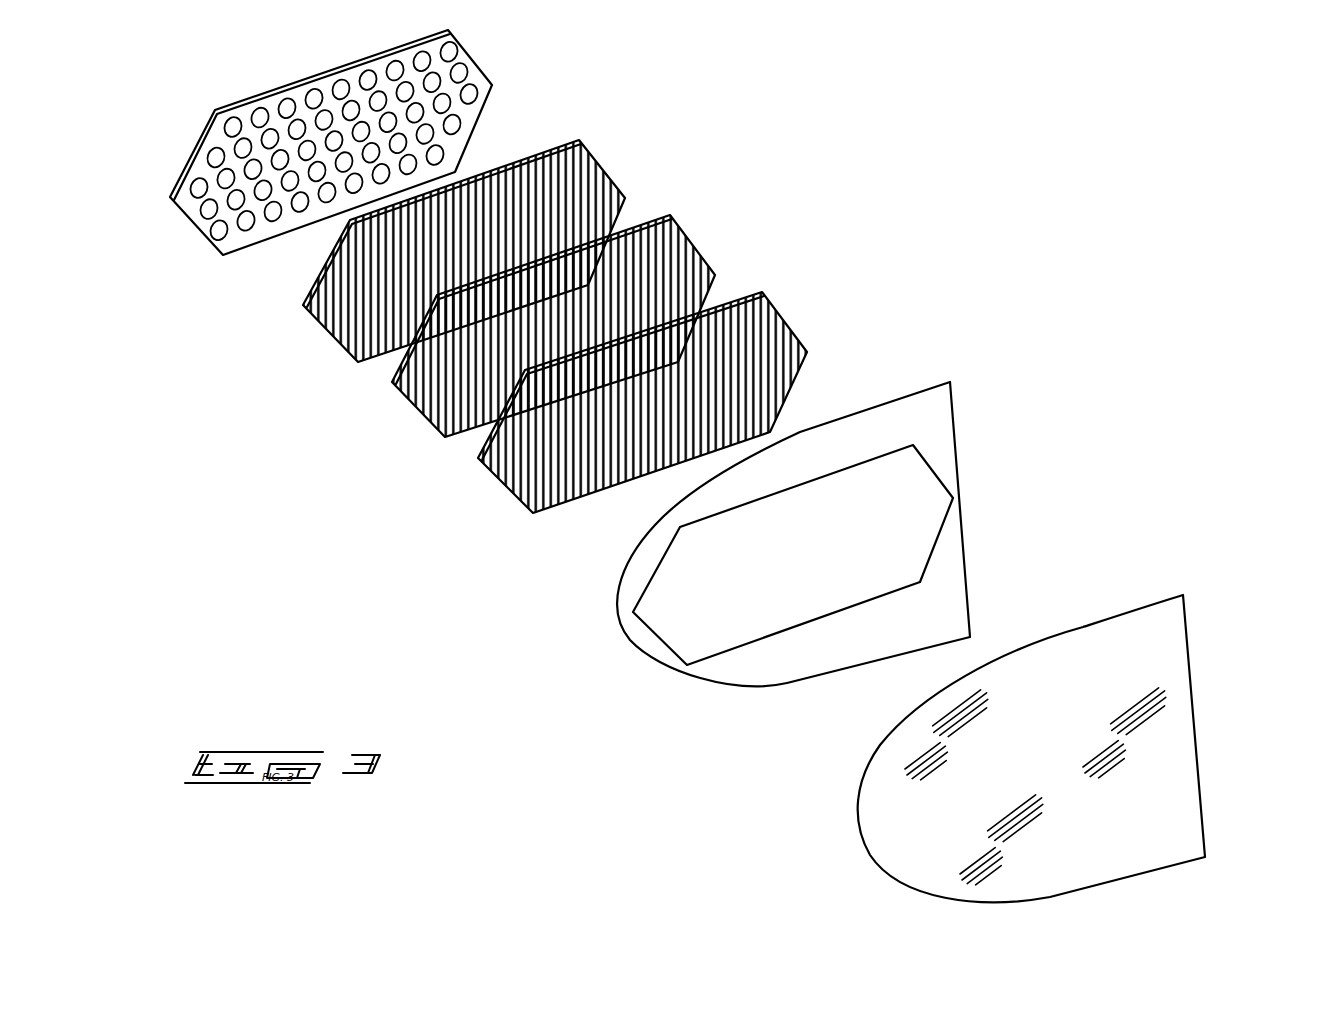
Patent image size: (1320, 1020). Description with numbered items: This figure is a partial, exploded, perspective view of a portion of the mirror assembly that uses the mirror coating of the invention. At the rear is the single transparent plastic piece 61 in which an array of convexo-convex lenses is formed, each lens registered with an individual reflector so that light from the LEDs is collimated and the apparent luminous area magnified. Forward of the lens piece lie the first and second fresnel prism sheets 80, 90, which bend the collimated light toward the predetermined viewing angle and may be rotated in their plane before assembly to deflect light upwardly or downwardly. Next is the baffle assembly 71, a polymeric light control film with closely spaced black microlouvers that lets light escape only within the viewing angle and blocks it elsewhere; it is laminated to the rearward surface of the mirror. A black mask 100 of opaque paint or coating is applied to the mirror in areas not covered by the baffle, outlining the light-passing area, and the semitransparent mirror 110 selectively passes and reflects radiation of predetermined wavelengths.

The single transparent plastic piece 61 is at (352, 78).
The second fresnel prism sheet 90 is at (497, 70).
The first fresnel prism sheet 80 is at (705, 236).
The baffle assembly 71 is at (795, 313).
The black mask 100 is at (943, 418).
The semitransparent mirror 110 is at (1178, 634).